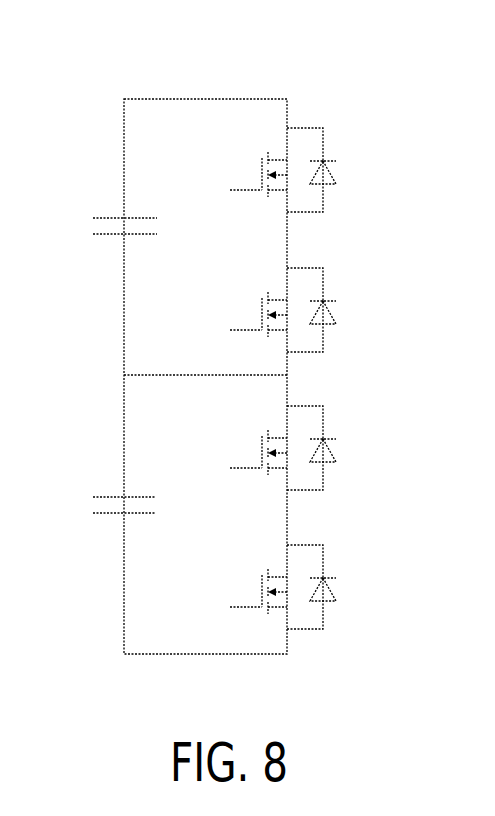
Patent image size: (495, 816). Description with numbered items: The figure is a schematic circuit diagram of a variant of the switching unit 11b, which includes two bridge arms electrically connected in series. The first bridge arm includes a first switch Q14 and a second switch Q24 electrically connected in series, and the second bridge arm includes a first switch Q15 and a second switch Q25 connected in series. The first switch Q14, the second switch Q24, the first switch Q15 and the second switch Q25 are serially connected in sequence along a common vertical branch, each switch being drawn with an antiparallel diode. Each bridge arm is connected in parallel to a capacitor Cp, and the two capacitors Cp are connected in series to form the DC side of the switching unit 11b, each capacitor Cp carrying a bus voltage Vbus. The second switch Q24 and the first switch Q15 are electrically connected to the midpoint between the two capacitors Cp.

The switching unit 11b is at (333, 95).
The bus voltage Vbus is at (52, 364).
The capacitor Cp is at (145, 365).
The first switch Q14 is at (274, 170).
The second switch Q24 is at (274, 310).
The first switch Q15 is at (274, 448).
The second switch Q25 is at (274, 587).